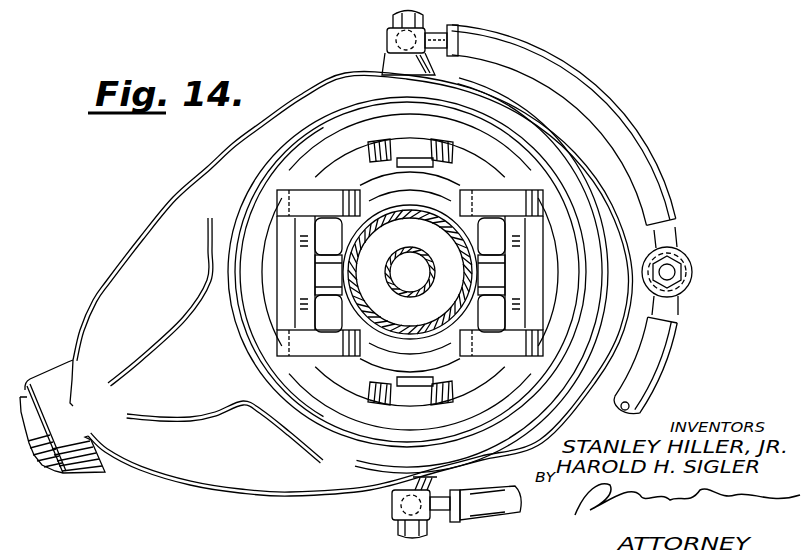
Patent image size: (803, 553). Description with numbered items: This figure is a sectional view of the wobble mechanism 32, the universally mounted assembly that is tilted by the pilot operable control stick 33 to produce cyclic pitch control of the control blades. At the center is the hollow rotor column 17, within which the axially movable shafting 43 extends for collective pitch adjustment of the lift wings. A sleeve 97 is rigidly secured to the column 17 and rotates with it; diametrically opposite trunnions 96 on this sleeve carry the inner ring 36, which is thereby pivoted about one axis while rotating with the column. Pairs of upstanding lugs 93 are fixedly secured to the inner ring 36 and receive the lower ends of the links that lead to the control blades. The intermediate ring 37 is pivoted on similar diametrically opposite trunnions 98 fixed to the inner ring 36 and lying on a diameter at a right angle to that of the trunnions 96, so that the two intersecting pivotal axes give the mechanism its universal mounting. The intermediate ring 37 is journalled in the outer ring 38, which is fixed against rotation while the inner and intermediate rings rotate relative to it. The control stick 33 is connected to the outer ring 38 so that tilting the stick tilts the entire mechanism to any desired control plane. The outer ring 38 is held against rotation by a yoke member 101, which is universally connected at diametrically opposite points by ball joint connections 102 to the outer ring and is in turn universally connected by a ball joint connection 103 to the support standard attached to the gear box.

The wobble mechanism 32 is at (223, 142).
The control stick 33 is at (44, 468).
The outer ring 38 is at (553, 153).
The yoke member 101 is at (668, 174).
The ball joint connection 103 is at (690, 264).
The ball joint connections 102 is at (384, 40).
The intermediate ring 37 is at (507, 147).
The trunnions 98 is at (398, 165).
The sleeve 97 is at (373, 222).
The upstanding lugs 93 is at (320, 197).
The trunnions 96 is at (325, 277).
The column 17 is at (358, 302).
The inner ring 36 is at (392, 360).
The axially movable shafting 43 is at (410, 250).